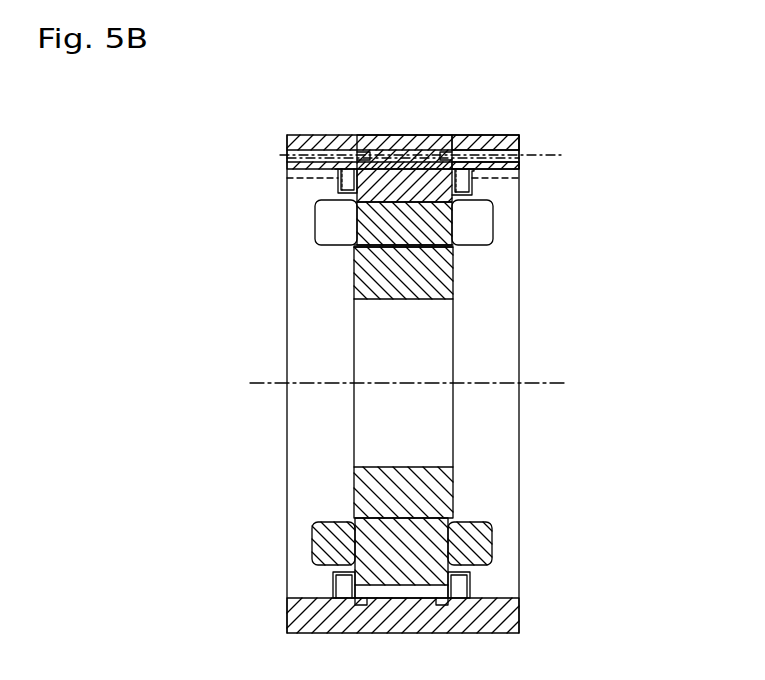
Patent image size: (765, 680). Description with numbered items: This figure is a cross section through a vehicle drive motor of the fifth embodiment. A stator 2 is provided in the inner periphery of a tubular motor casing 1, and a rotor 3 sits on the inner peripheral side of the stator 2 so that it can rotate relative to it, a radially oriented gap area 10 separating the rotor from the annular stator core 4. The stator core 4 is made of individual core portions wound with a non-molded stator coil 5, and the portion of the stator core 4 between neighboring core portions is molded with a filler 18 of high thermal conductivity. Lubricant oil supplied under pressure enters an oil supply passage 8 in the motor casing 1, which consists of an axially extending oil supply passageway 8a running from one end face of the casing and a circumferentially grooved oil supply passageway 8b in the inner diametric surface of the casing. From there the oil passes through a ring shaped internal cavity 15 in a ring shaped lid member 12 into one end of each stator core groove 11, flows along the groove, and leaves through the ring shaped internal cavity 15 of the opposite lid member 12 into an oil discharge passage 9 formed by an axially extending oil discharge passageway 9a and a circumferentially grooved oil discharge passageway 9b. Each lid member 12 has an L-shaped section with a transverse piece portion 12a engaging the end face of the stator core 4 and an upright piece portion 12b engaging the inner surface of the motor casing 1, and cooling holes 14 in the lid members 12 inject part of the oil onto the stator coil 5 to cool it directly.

The motor casing 1 is at (360, 135).
The stator 2 is at (491, 253).
The rotor 3 is at (468, 311).
The stator core 4 is at (423, 250).
The stator coil 5 is at (493, 232).
The oil supply passage 8 is at (360, 145).
The axially extending oil supply passageway 8a is at (292, 135).
The circumferentially grooved oil supply passageway 8b is at (287, 178).
The oil discharge passage 9 is at (554, 135).
The axially extending oil discharge passageway 9a is at (519, 135).
The circumferentially grooved oil discharge passageway 9b is at (521, 178).
The gap area 10 is at (417, 228).
The stator core groove 11 is at (410, 150).
The lid member 12 is at (405, 383).
The transverse piece portion 12a is at (340, 193).
The upright piece portion 12b is at (338, 183).
The cooling hole 14 is at (348, 196).
The ring shaped internal cavity 15 is at (390, 152).
The filler 18 is at (412, 243).